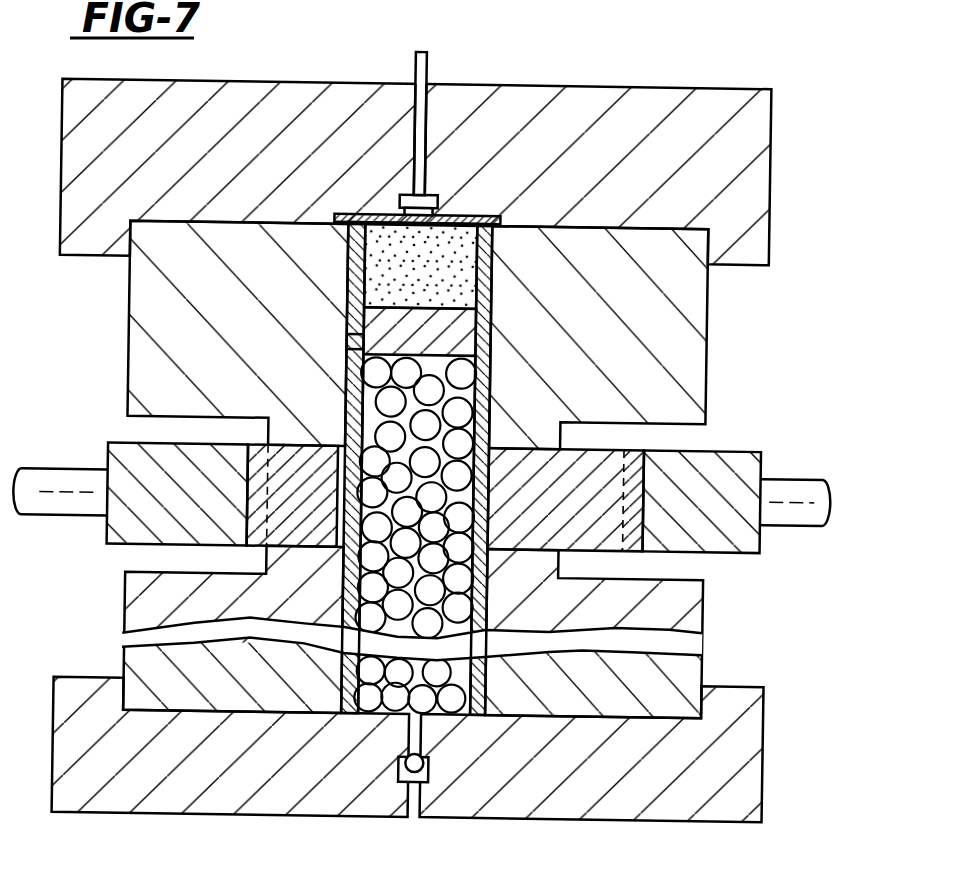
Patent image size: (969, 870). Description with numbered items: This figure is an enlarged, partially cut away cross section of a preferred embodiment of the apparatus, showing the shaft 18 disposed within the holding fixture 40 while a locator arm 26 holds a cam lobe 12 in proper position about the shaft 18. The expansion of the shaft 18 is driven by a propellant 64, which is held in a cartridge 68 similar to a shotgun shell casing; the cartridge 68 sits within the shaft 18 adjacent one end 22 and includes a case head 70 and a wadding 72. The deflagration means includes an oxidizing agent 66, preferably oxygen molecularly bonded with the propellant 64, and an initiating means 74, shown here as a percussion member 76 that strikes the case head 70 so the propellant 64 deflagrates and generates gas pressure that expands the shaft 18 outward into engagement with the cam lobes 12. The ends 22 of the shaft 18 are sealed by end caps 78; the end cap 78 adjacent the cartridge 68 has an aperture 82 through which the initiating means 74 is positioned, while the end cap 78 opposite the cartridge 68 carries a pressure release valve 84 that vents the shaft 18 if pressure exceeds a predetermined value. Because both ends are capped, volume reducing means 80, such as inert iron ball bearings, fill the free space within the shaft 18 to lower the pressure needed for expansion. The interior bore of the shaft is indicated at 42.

The cam lobe 12 is at (346, 511).
The shaft 18 is at (439, 470).
The end of shaft 22 is at (376, 451).
The locator arm 26 is at (421, 477).
The holding fixture 40 is at (120, 588).
The mold cavity 42 is at (555, 528).
The propellant 64 is at (558, 265).
The oxidizing agent 66 is at (214, 333).
The cartridge 68 is at (558, 325).
The case head 70 is at (497, 135).
The wadding 72 is at (222, 358).
The initiating means 74 is at (464, 120).
The percussion member 76 is at (447, 108).
The end cap 78 is at (763, 847).
The volume reducing means 80 is at (553, 535).
The aperture 82 is at (395, 129).
The pressure release valve 84 is at (441, 809).